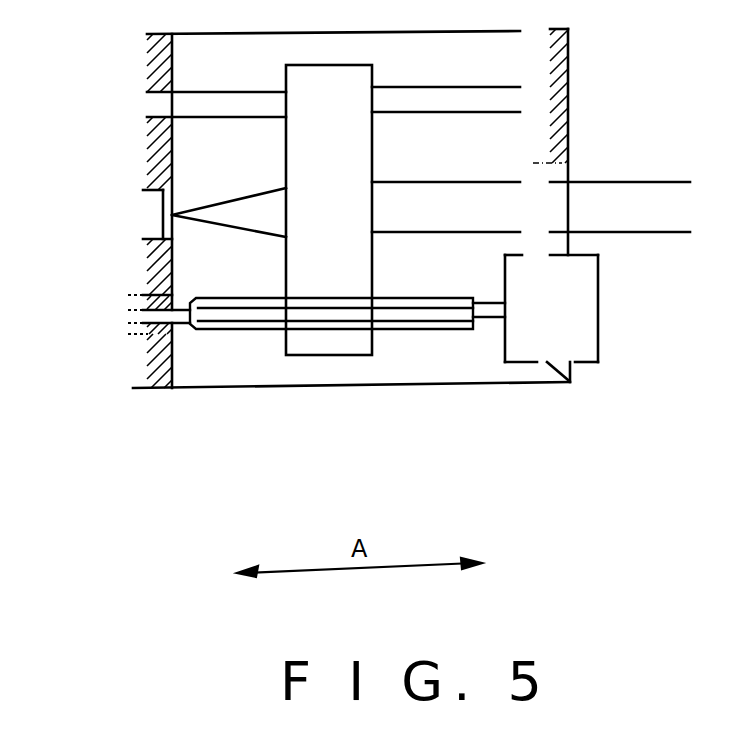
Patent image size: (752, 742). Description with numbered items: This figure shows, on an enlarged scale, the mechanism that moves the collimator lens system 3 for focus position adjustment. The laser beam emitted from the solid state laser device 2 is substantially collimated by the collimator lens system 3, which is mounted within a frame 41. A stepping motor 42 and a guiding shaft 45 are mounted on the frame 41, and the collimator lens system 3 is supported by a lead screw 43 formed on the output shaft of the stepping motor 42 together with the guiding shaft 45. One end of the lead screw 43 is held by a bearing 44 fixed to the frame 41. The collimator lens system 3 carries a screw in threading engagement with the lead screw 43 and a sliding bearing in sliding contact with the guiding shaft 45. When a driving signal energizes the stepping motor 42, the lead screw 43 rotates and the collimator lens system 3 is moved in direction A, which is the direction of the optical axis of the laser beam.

The solid state laser device 2 is at (115, 132).
The collimator lens system 3 is at (328, 347).
The frame 41 is at (150, 390).
The stepping motor 42 is at (583, 321).
The lead screw 43 is at (437, 331).
The bearing 44 is at (118, 327).
The guiding shaft 45 is at (568, 92).